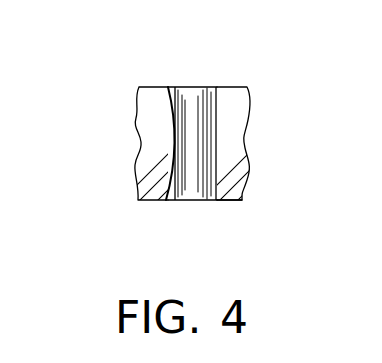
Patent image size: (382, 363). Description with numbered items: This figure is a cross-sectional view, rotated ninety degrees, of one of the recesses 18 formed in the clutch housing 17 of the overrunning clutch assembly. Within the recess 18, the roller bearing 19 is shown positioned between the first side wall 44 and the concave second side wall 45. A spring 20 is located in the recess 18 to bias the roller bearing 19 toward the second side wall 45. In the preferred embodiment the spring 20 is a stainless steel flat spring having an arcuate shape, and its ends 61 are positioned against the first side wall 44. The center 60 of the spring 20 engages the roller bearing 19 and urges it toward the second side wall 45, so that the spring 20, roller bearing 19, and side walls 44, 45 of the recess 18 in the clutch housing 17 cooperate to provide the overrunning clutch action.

The clutch housing 17 is at (138, 87).
The recess 18 is at (224, 200).
The roller bearing 19 is at (192, 148).
The spring 20 is at (150, 162).
The first side wall 44 is at (147, 123).
The second side wall 45 is at (245, 110).
The center 60 is at (172, 139).
The ends 61 is at (169, 87).